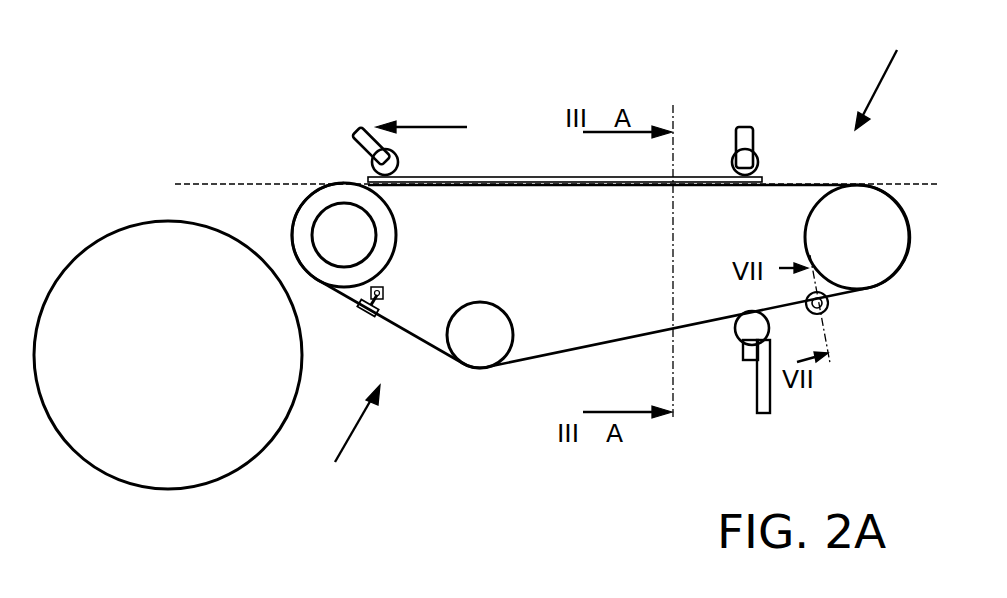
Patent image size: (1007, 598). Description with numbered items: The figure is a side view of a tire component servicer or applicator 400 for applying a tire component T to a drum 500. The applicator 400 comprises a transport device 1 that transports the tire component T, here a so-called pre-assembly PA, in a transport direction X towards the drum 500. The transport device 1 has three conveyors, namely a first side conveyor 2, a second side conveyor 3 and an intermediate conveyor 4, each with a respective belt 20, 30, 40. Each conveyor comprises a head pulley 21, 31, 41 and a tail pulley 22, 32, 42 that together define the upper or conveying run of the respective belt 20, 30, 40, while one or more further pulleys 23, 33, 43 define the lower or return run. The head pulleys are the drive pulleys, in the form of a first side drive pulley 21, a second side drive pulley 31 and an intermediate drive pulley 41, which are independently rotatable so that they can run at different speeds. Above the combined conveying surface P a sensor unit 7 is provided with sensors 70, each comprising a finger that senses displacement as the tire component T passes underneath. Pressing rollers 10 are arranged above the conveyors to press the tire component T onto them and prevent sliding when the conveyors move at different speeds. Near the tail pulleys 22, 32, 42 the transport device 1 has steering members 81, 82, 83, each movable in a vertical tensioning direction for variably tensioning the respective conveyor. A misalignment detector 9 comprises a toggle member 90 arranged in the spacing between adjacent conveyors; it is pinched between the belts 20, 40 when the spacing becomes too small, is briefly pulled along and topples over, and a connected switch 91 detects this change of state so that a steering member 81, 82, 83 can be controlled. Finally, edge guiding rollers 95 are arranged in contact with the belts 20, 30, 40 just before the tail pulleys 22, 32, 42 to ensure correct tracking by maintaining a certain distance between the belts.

The transport device 1 is at (349, 440).
The first side conveyor 2 is at (601, 284).
The second side conveyor 3 is at (601, 284).
The intermediate conveyor 4 is at (601, 284).
The belt 20 is at (601, 284).
The belt 30 is at (601, 284).
The belt 40 is at (796, 183).
The first side drive pulley 21 is at (440, 235).
The second side drive pulley 31 is at (440, 235).
The intermediate drive pulley 41 is at (397, 222).
The tail pulley 22 is at (769, 237).
The tail pulley 32 is at (769, 237).
The tail pulley 42 is at (807, 237).
The further pulley 23 is at (540, 311).
The further pulley 33 is at (540, 311).
The further pulley 43 is at (501, 310).
The sensor unit 7 is at (715, 116).
The sensor 70 is at (734, 156).
The pressing roller 10 is at (373, 160).
The misalignment detector 9 is at (380, 322).
The toggle member 90 is at (366, 315).
The switch 91 is at (384, 290).
The edge guiding roller 95 is at (829, 305).
The steering member 81 is at (829, 372).
The steering member 82 is at (829, 372).
The steering member 83 is at (770, 398).
The tire component servicer or applicator 400 is at (895, 72).
The drum 500 is at (140, 222).
The combined conveying surface P is at (215, 184).
The tire component T is at (565, 116).
The pre-assembly PA is at (500, 176).
The transport direction X is at (421, 112).